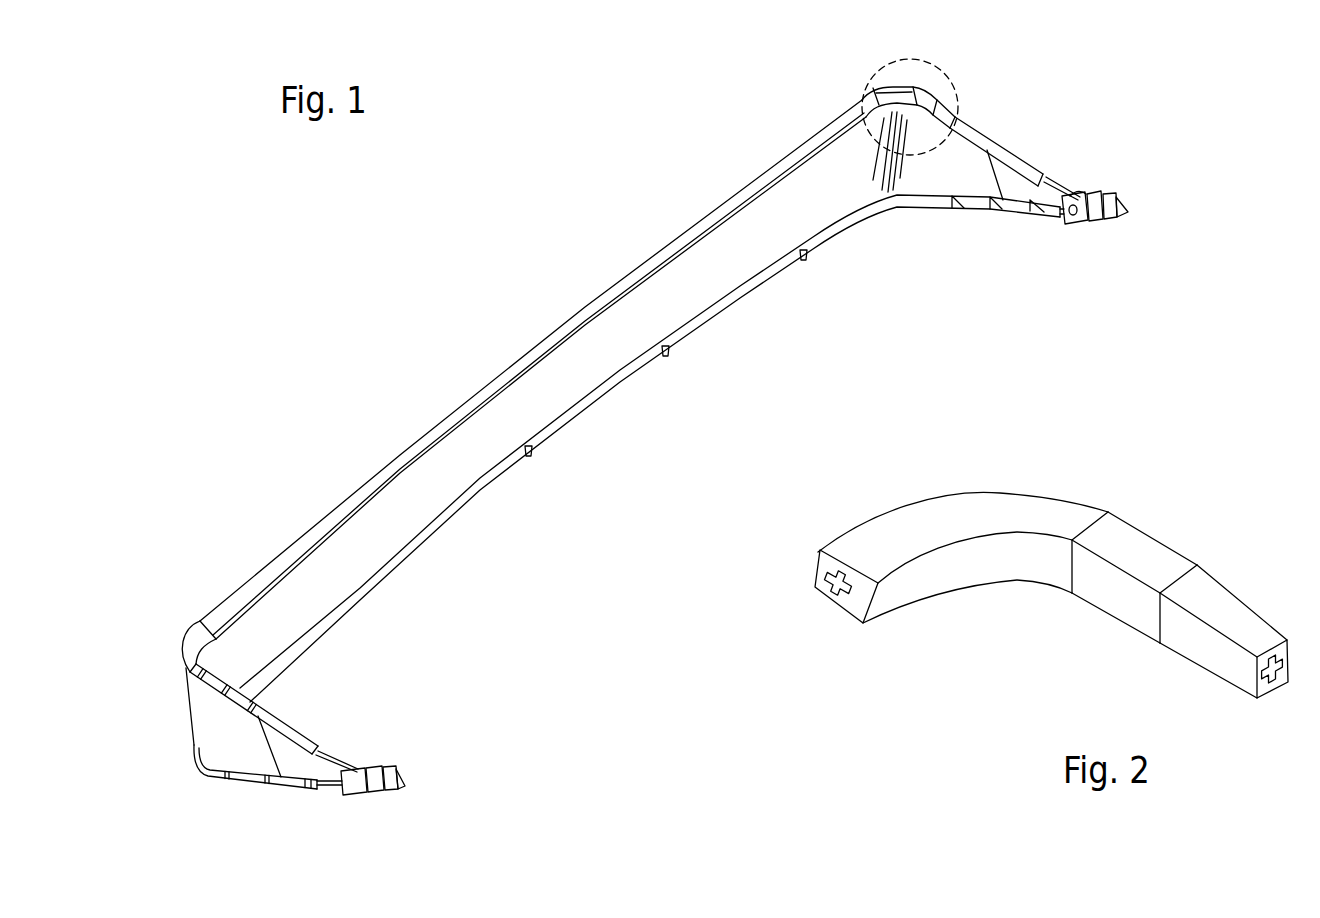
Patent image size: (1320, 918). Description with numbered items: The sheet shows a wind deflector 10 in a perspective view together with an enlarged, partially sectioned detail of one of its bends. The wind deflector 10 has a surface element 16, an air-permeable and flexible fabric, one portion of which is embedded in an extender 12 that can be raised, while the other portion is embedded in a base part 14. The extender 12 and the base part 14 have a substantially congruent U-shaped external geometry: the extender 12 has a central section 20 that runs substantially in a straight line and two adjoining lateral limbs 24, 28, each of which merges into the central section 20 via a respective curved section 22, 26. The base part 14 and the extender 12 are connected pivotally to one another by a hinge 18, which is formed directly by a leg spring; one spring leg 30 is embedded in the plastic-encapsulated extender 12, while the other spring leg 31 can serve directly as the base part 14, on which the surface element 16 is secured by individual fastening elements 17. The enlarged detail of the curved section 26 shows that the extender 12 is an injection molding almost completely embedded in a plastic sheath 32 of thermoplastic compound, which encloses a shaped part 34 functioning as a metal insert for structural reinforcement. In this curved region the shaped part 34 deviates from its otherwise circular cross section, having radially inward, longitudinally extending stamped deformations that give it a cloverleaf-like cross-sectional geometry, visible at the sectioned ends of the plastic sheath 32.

In FIG. 1, the wind deflector 10 is at (396, 296).
In FIG. 1, the extender 12 is at (580, 300).
In FIG. 1, the base part 14 is at (623, 372).
In FIG. 1, the surface element 16 is at (485, 472).
In FIG. 1, the fastening elements 17 is at (804, 260).
In FIG. 1, the hinge 18 is at (1082, 192).
In FIG. 1, the central section 20 is at (400, 453).
In FIG. 1, the curved section 22 is at (183, 641).
In FIG. 1, the lateral limb 24 is at (283, 726).
In FIG. 1, the curved section 26 is at (893, 90).
In FIG. 2, the curved section 26 is at (1042, 510).
In FIG. 1, the lateral limb 28 is at (1013, 147).
In FIG. 1, the spring leg 30 is at (1060, 192).
In FIG. 1, the spring leg 31 is at (1056, 216).
In FIG. 2, the plastic sheath 32 is at (868, 600).
In FIG. 2, the shaped part 34 is at (822, 577).